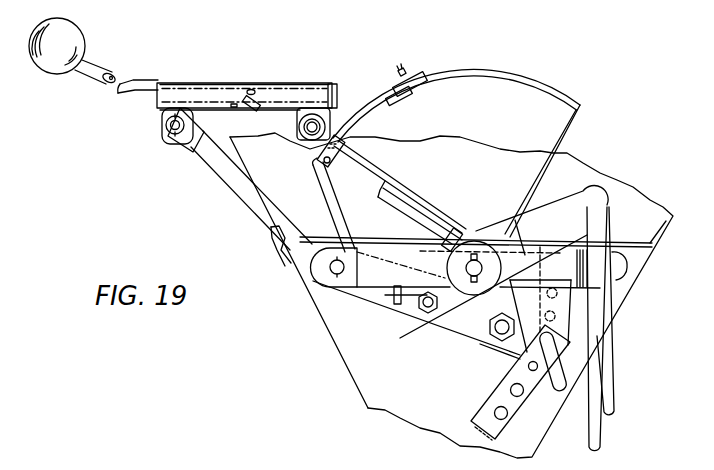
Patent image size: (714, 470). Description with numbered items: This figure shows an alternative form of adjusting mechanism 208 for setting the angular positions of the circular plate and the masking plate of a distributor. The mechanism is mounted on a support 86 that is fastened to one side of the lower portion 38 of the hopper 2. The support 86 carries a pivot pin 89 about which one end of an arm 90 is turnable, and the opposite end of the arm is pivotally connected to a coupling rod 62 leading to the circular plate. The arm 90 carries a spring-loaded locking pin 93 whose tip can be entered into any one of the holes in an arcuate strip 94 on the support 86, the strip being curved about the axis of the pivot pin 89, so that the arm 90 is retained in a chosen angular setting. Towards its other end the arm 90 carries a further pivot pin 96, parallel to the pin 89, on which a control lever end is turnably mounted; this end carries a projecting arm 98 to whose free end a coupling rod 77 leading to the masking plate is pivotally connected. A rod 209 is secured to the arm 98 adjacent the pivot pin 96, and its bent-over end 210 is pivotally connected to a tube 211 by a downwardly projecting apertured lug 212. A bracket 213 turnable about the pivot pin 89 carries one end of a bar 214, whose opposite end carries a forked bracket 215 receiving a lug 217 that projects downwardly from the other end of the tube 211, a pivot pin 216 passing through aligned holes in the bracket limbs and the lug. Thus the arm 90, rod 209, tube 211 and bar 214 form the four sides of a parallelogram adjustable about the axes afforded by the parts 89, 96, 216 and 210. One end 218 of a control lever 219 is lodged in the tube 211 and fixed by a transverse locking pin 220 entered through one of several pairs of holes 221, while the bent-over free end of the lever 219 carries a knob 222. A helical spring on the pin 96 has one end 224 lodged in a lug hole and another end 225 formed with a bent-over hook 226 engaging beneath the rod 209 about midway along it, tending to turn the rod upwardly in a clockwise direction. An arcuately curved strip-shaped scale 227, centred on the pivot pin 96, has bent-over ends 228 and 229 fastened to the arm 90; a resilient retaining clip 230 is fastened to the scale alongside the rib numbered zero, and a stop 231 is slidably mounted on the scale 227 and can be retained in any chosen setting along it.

The hopper 2 is at (634, 190).
The lower portion 38 is at (353, 378).
The coupling rod 62 is at (600, 436).
The coupling rod 77 is at (612, 357).
The support 86 is at (452, 333).
The pivot pin 89 is at (306, 284).
The arm 90 is at (356, 288).
The locking pin 93 is at (551, 392).
The arcuate strip 94 is at (490, 392).
The pivot pin 96 is at (482, 266).
The projecting arm 98 is at (560, 201).
The adjusting mechanism 208 is at (471, 139).
The rod 209 is at (374, 176).
The end 210 is at (330, 120).
The tube 211 is at (318, 83).
The apertured lug 212 is at (340, 94).
The bracket 213 is at (296, 268).
The bar 214 is at (226, 178).
The forked bracket 215 is at (181, 150).
The pivot pin 216 is at (162, 130).
The lug 217 is at (160, 114).
The end 218 is at (286, 85).
The control lever 219 is at (108, 75).
The locking pin 220 is at (253, 91).
The holes 221 is at (233, 104).
The knob 222 is at (58, 74).
The end 224 is at (405, 300).
The end 225 is at (430, 216).
The bent-over hook 226 is at (385, 196).
The scale 227 is at (491, 78).
The end 228 is at (566, 142).
The end 229 is at (328, 199).
The retaining clip 230 is at (318, 153).
The stop 231 is at (410, 72).